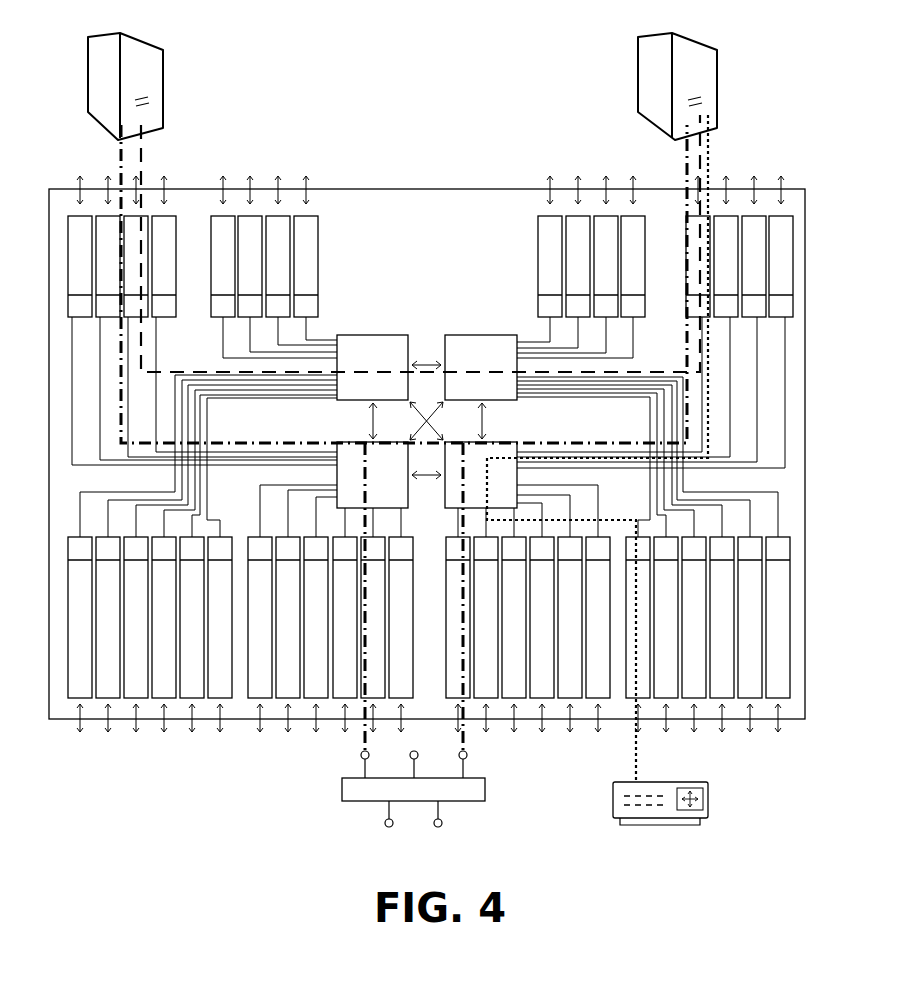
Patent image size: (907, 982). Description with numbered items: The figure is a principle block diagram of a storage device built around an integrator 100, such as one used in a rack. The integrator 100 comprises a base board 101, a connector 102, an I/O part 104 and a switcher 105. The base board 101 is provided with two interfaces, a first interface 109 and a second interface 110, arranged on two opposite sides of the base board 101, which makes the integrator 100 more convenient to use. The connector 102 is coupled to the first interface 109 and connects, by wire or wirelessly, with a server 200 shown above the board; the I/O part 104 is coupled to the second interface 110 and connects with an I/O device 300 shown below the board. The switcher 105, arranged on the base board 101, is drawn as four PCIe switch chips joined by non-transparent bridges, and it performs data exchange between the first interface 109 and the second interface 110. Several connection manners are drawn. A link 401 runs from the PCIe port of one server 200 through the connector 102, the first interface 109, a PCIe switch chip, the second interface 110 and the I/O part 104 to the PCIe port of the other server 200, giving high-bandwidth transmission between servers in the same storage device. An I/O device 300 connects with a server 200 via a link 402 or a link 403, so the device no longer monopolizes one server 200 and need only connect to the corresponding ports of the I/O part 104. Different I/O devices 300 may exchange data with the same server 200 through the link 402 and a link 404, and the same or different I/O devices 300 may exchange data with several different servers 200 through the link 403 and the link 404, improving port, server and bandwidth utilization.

The integrator 100 is at (370, 166).
The base board 101 is at (792, 510).
The connector 102 is at (781, 270).
The I/O part 104 is at (780, 598).
The switcher 105 is at (457, 358).
The first interface 109 is at (775, 310).
The second interface 110 is at (778, 540).
The server 200 is at (152, 80).
The I/O device 300 is at (455, 800).
The link 401 is at (143, 166).
The link 402 is at (705, 177).
The link 403 is at (372, 745).
The link 404 is at (708, 180).